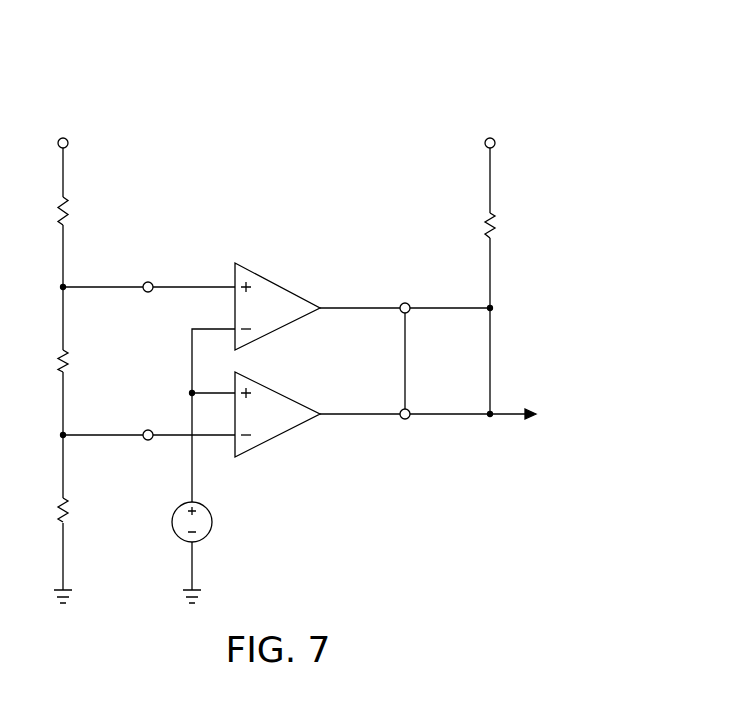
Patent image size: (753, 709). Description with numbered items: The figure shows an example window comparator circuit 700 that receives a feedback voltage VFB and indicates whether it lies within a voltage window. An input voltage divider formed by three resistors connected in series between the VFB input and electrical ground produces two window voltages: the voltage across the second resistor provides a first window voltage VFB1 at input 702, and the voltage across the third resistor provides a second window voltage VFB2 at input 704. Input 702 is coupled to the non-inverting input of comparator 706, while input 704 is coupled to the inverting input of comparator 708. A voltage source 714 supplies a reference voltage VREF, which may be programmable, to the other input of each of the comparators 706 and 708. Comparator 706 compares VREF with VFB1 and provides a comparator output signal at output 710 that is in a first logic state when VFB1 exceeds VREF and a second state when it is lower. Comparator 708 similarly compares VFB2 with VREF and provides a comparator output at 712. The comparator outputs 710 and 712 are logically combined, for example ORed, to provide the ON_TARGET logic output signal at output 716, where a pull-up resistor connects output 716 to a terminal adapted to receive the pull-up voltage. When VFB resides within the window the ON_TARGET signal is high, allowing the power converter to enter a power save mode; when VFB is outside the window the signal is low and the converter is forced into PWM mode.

The window comparator circuit 700 is at (148, 70).
The input 702 is at (145, 297).
The input 704 is at (146, 443).
The comparator 706 is at (277, 282).
The comparator 708 is at (277, 437).
The output 710 is at (452, 300).
The comparator output 712 is at (448, 419).
The voltage source 714 is at (170, 524).
The output 716 is at (508, 419).